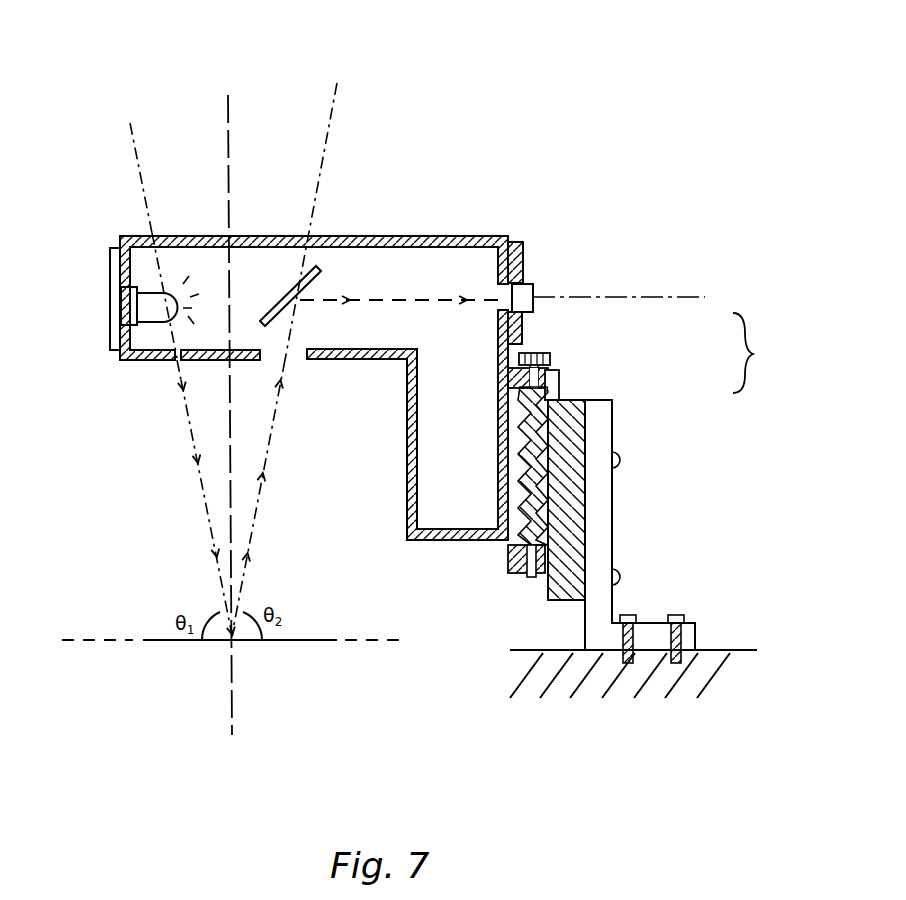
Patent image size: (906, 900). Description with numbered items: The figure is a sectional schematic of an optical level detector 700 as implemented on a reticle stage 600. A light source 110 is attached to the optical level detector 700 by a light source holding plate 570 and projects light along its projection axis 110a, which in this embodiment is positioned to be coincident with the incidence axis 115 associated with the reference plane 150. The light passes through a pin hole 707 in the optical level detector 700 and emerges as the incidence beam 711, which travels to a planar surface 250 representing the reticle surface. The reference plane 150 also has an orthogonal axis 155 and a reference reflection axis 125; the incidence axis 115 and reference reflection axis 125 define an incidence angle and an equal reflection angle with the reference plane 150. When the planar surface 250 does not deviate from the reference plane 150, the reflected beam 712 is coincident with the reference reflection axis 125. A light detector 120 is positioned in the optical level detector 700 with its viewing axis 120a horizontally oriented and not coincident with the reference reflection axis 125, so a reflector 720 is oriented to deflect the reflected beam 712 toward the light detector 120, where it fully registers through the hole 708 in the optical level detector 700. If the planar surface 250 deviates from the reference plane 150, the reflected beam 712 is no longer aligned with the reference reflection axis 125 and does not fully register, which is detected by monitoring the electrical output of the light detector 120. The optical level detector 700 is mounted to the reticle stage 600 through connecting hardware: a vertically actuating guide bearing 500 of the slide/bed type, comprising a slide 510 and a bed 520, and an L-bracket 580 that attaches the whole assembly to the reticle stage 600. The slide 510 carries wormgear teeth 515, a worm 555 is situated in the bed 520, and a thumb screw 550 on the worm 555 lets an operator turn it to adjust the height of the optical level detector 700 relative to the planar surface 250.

The optical level detector 700 is at (486, 234).
The light source holding plate 570 is at (111, 260).
The light source 110 is at (148, 308).
The projection axis 110a is at (143, 182).
The incidence axis 115 is at (136, 138).
The orthogonal axis 155 is at (230, 120).
The reference reflection axis 125 is at (340, 92).
The reflector 720 is at (322, 273).
The hole 708 is at (490, 313).
The pin hole 707 is at (170, 371).
The incidence beam 711 is at (197, 462).
The reflected beam 712 is at (268, 447).
The reference plane 150 is at (84, 640).
The planar surface 250 is at (317, 641).
The light detector 120 is at (533, 283).
The viewing axis 120a is at (688, 297).
The thumb screw 550 is at (545, 357).
The bed 520 is at (550, 385).
The slide 510 is at (590, 398).
The vertically actuating guide bearing 500 is at (762, 353).
The worm 555 is at (545, 518).
The wormgear teeth 515 is at (525, 583).
The L-bracket 580 is at (650, 640).
The reticle stage 600 is at (748, 660).